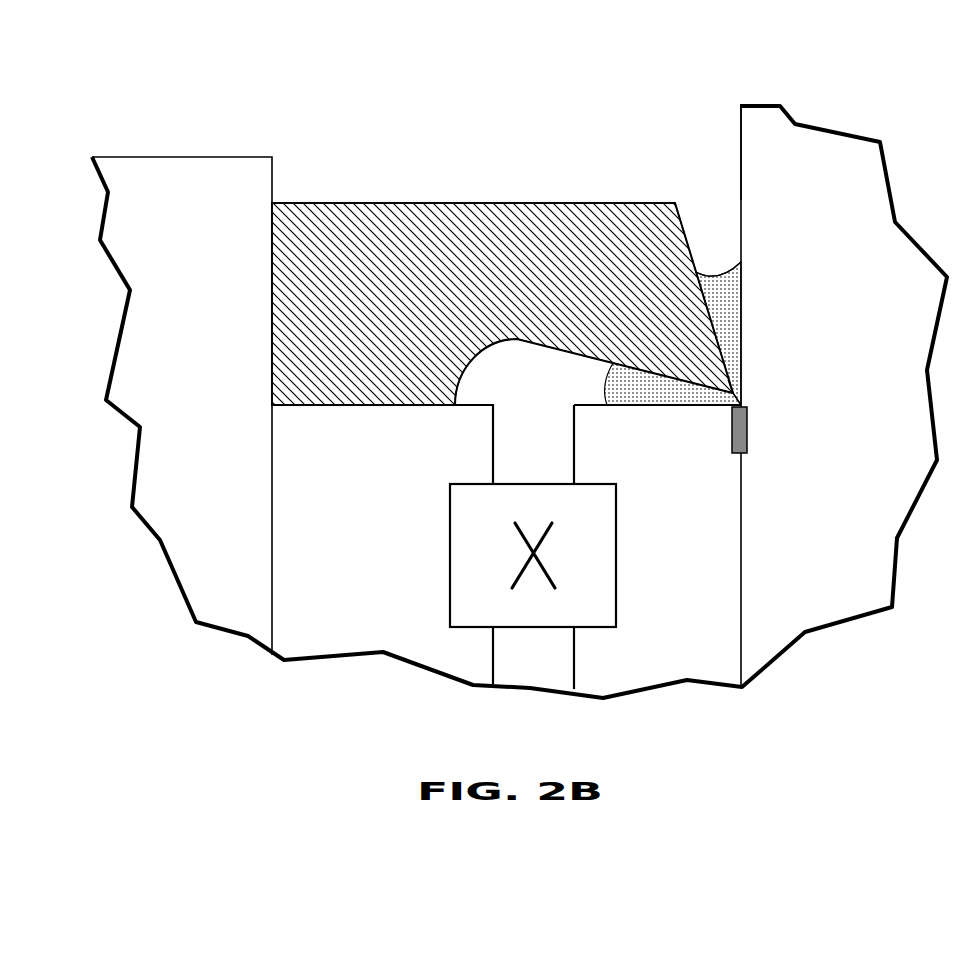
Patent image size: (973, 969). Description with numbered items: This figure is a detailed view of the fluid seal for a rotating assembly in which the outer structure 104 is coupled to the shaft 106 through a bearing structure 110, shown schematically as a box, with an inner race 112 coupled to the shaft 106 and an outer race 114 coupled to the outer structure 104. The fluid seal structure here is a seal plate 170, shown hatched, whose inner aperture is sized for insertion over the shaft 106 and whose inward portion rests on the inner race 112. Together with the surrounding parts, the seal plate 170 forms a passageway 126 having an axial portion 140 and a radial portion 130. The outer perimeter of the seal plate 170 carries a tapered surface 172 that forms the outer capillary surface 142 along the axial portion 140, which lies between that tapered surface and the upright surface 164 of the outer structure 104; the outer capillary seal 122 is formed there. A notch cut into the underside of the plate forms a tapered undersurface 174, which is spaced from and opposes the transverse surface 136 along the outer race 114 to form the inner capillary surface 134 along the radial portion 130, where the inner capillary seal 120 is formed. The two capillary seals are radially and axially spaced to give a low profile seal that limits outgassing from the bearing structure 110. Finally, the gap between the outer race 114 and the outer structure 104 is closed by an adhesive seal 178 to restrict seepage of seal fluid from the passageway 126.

The outer structure 104 is at (872, 363).
The shaft 106 is at (158, 356).
The bearing structure 110 is at (590, 567).
The inner race 112 is at (326, 559).
The outer race 114 is at (637, 636).
The inner capillary seal 120 is at (607, 392).
The outer capillary seal 122 is at (713, 270).
The passageway 126 is at (733, 387).
The radial portion 130 is at (607, 455).
The inner capillary surface 134 is at (645, 373).
The transverse surface 136 is at (742, 400).
The axial portion 140 is at (760, 260).
The outer capillary surface 142 is at (684, 236).
The upright surface 164 is at (740, 145).
The seal plate 170 is at (492, 242).
The tapered surface 172 is at (708, 300).
The tapered undersurface 174 is at (594, 357).
The adhesive seal 178 is at (732, 424).